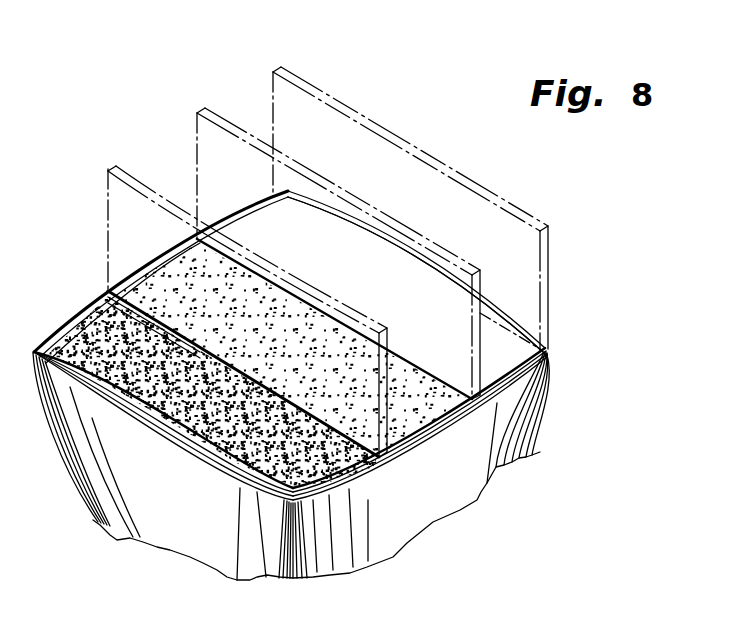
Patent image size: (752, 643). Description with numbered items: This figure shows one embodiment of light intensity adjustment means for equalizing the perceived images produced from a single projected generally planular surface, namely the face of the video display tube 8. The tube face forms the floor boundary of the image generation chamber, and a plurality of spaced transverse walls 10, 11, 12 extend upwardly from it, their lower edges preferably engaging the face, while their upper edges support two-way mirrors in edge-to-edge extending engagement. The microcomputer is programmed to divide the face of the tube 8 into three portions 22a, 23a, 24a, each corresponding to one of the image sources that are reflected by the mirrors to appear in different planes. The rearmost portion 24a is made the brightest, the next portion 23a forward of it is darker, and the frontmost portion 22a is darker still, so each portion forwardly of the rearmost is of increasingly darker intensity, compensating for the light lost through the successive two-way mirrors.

The video display tube 8 is at (462, 492).
The transverse wall 10 is at (388, 329).
The transverse wall 11 is at (480, 280).
The transverse wall 12 is at (552, 231).
The portion of tube face 22a is at (362, 477).
The portion of tube face 23a is at (412, 425).
The portion of tube face 24a is at (503, 355).